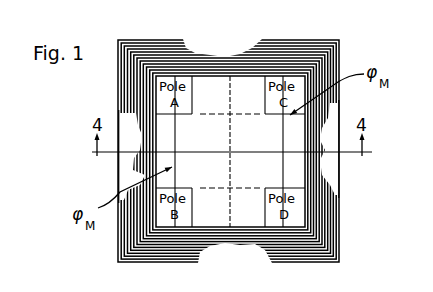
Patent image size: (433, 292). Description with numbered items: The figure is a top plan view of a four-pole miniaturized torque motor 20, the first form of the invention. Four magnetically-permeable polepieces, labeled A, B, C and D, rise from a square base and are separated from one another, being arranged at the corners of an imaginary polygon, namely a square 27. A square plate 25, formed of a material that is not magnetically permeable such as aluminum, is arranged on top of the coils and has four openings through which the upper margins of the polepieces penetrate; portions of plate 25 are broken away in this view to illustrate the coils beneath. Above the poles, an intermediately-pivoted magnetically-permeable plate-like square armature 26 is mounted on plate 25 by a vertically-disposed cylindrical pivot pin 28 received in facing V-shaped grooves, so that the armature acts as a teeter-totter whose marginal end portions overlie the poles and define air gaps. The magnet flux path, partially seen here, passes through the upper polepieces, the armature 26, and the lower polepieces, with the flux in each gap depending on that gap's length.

The torque motor 20 is at (352, 43).
The square plate 25 is at (229, 41).
The armature 26 is at (196, 148).
The square 27 is at (303, 180).
The pivot pin 28 is at (233, 150).